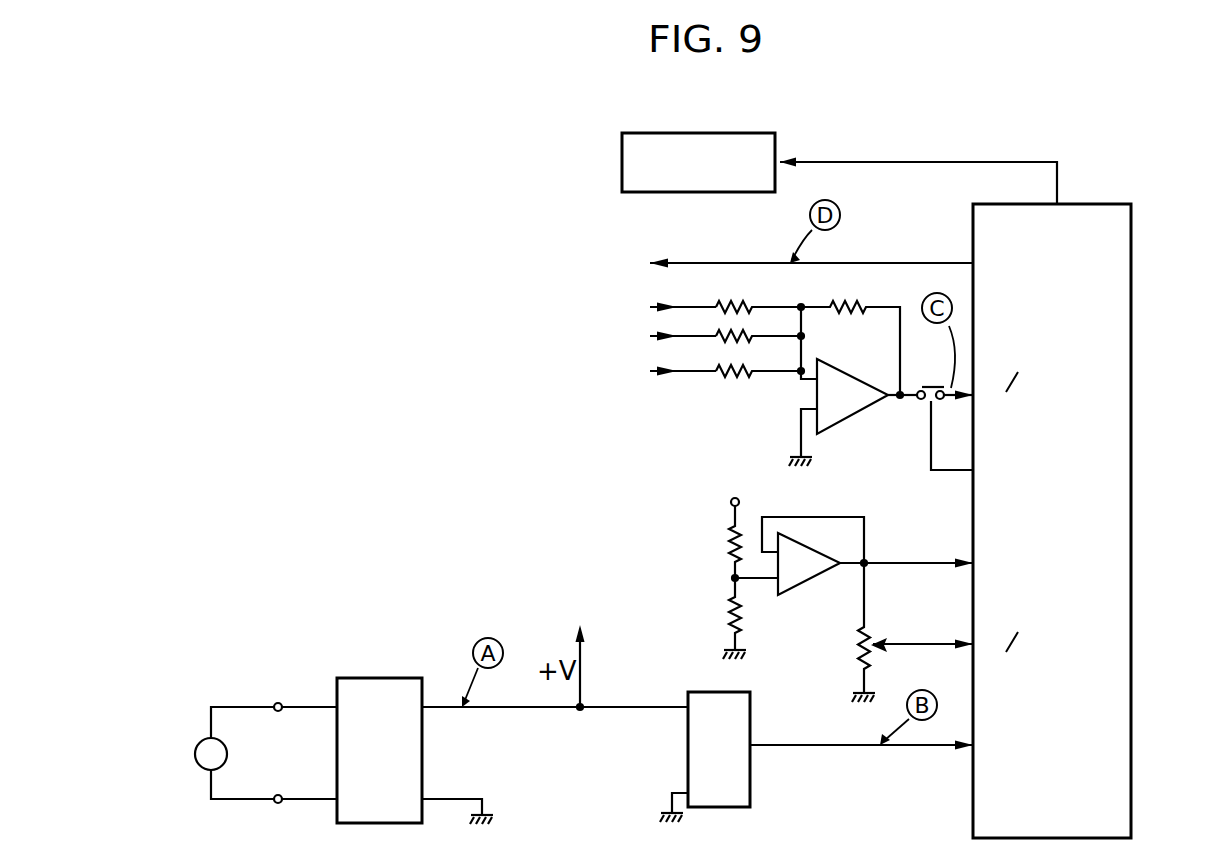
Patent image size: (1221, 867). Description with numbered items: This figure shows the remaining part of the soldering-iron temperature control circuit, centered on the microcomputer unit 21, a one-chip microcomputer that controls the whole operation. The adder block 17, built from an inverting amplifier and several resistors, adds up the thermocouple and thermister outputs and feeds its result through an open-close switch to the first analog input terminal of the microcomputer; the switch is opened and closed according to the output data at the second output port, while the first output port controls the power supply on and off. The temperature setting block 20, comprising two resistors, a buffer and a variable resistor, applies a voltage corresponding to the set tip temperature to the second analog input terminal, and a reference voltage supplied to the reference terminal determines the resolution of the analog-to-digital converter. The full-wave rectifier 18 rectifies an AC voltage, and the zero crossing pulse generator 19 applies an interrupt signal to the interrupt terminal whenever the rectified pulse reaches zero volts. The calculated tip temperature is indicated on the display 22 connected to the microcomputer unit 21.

The adder block 17 is at (879, 467).
The full-wave rectifier 18 is at (362, 678).
The zero crossing pulse generator 19 is at (750, 794).
The temperature setting block 20 is at (866, 509).
The microcomputer unit 21 is at (1131, 655).
The display 22 is at (620, 160).